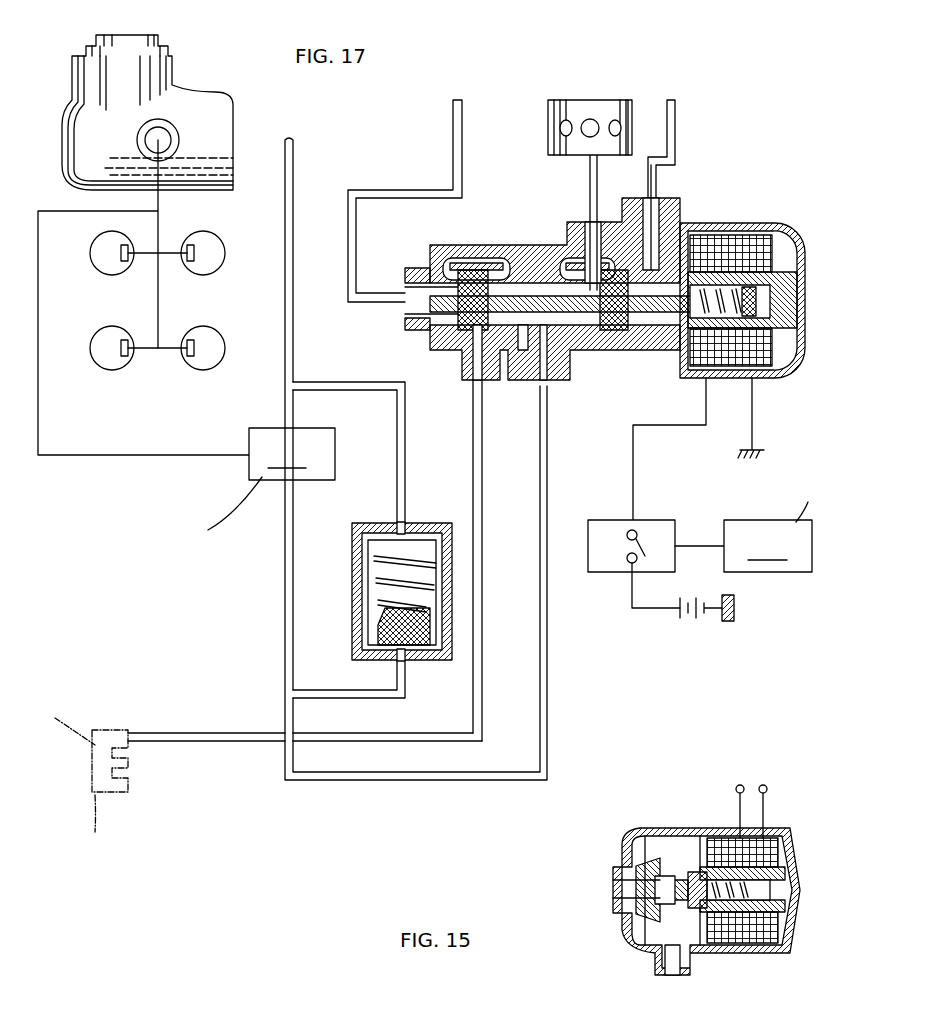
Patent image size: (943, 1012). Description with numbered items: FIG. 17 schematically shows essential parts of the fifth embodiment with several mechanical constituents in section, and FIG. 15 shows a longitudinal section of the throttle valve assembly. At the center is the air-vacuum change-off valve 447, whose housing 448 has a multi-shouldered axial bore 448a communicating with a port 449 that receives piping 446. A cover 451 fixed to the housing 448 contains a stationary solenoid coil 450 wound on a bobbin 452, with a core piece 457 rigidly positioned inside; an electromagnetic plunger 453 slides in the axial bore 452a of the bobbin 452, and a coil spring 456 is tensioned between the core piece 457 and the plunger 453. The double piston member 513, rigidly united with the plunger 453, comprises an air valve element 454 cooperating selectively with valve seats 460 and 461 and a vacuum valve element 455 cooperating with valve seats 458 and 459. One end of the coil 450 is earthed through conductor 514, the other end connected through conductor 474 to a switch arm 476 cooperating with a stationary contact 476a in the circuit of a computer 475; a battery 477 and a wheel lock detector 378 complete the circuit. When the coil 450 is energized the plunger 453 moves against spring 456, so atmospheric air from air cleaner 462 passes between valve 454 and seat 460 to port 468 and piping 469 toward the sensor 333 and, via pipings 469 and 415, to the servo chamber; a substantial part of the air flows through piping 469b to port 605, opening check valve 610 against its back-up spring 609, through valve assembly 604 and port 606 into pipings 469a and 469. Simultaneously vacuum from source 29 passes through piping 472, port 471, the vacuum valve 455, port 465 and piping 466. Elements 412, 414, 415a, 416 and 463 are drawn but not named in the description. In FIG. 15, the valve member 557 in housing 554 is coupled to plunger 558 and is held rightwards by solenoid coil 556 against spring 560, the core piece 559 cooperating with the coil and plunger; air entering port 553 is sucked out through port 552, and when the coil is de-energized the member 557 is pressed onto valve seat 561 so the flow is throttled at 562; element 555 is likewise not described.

In FIG. 17, the brake booster 412 is at (60, 135).
In FIG. 17, the wheel 414 is at (108, 248).
In FIG. 17, the piping 415 is at (160, 244).
In FIG. 17, the wheel brake 416 is at (120, 270).
In FIG. 17, the sensor line 415a is at (86, 457).
In FIG. 17, the sensor 333 is at (216, 499).
In FIG. 15, the sensor 333 is at (705, 880).
In FIG. 17, the wheel lock detector 378 is at (764, 525).
In FIG. 17, the vacuum source 29 is at (81, 767).
In FIG. 17, the piping 472 is at (190, 744).
In FIG. 17, the piping 469 is at (345, 782).
In FIG. 17, the piping 469a is at (318, 386).
In FIG. 17, the piping 469b is at (387, 702).
In FIG. 17, the piping 466 is at (463, 128).
In FIG. 17, the port 465 is at (415, 324).
In FIG. 17, the vacuum valve element 455 is at (425, 295).
In FIG. 17, the valve seat 458 is at (438, 262).
In FIG. 17, the housing 448 is at (468, 248).
In FIG. 17, the valve seat 459 is at (502, 262).
In FIG. 17, the valve seat 460 is at (572, 258).
In FIG. 17, the air cleaner 462 is at (580, 104).
In FIG. 17, the rod 463 is at (590, 176).
In FIG. 17, the piping 446 is at (676, 140).
In FIG. 17, the port 449 is at (660, 202).
In FIG. 17, the valve seat 461 is at (640, 262).
In FIG. 17, the air-vacuum change-off valve 447 is at (610, 398).
In FIG. 17, the electromagnetic plunger 453 is at (730, 268).
In FIG. 17, the axial bore 452a is at (756, 290).
In FIG. 17, the core piece 457 is at (790, 290).
In FIG. 17, the cover 451 is at (806, 306).
In FIG. 17, the bobbin 452 is at (770, 340).
In FIG. 17, the solenoid coil 450 is at (780, 374).
In FIG. 17, the conductor 514 is at (754, 408).
In FIG. 17, the coil spring 456 is at (700, 352).
In FIG. 17, the air valve element 454 is at (616, 330).
In FIG. 17, the port 468 is at (544, 366).
In FIG. 17, the axial bore 448a is at (516, 350).
In FIG. 17, the port 471 is at (476, 378).
In FIG. 17, the double piston member 513 is at (468, 352).
In FIG. 17, the conductor 474 is at (632, 448).
In FIG. 17, the switch arm 476 is at (640, 532).
In FIG. 17, the computer 475 is at (700, 527).
In FIG. 17, the stationary contact 476a is at (628, 566).
In FIG. 17, the battery 477 is at (712, 630).
In FIG. 17, the port 606 is at (404, 522).
In FIG. 17, the back-up spring 609 is at (375, 558).
In FIG. 17, the valve assembly 604 is at (381, 591).
In FIG. 17, the check valve 610 is at (400, 628).
In FIG. 17, the port 605 is at (404, 662).
In FIG. 15, the valve member 557 is at (660, 860).
In FIG. 15, the housing 554 is at (700, 836).
In FIG. 15, the valve seat 561 is at (628, 862).
In FIG. 15, the port 552 is at (620, 894).
In FIG. 15, the throttle 562 is at (640, 928).
In FIG. 15, the port 553 is at (668, 965).
In FIG. 15, the plunger 558 is at (708, 945).
In FIG. 15, the solenoid coil 556 is at (750, 930).
In FIG. 15, the core piece 559 is at (790, 876).
In FIG. 15, the spring 560 is at (770, 888).
In FIG. 15, the coil 555 is at (775, 935).